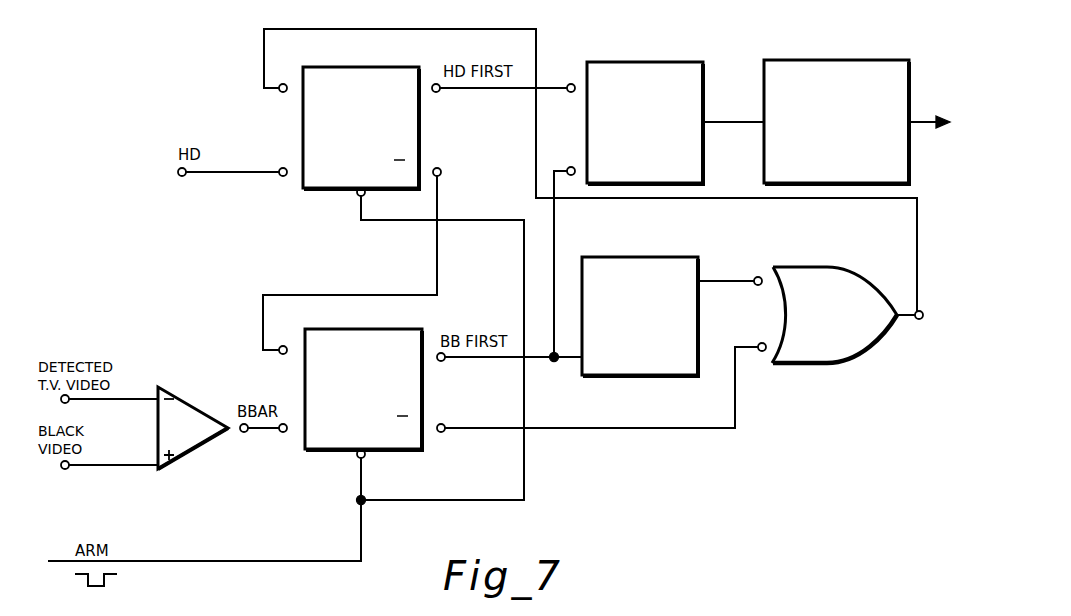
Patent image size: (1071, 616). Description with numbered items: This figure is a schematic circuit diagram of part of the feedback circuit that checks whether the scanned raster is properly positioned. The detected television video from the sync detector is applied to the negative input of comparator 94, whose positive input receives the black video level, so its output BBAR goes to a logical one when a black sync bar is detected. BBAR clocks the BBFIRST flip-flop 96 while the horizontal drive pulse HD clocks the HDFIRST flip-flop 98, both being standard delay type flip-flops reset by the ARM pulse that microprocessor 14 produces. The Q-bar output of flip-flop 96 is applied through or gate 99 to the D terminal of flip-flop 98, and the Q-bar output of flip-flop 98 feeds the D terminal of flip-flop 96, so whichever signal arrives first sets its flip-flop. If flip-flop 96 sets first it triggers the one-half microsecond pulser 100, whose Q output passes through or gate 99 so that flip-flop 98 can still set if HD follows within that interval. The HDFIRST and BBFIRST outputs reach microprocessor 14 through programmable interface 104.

The microprocessor 14 is at (860, 60).
The comparator 94 is at (194, 398).
The BBFIRST flip-flop 96 is at (416, 330).
The HDFIRST flip-flop 98 is at (355, 66).
The or gate 99 is at (862, 243).
The one-half microsecond pulser 100 is at (600, 258).
The programmable interface 104 is at (677, 62).